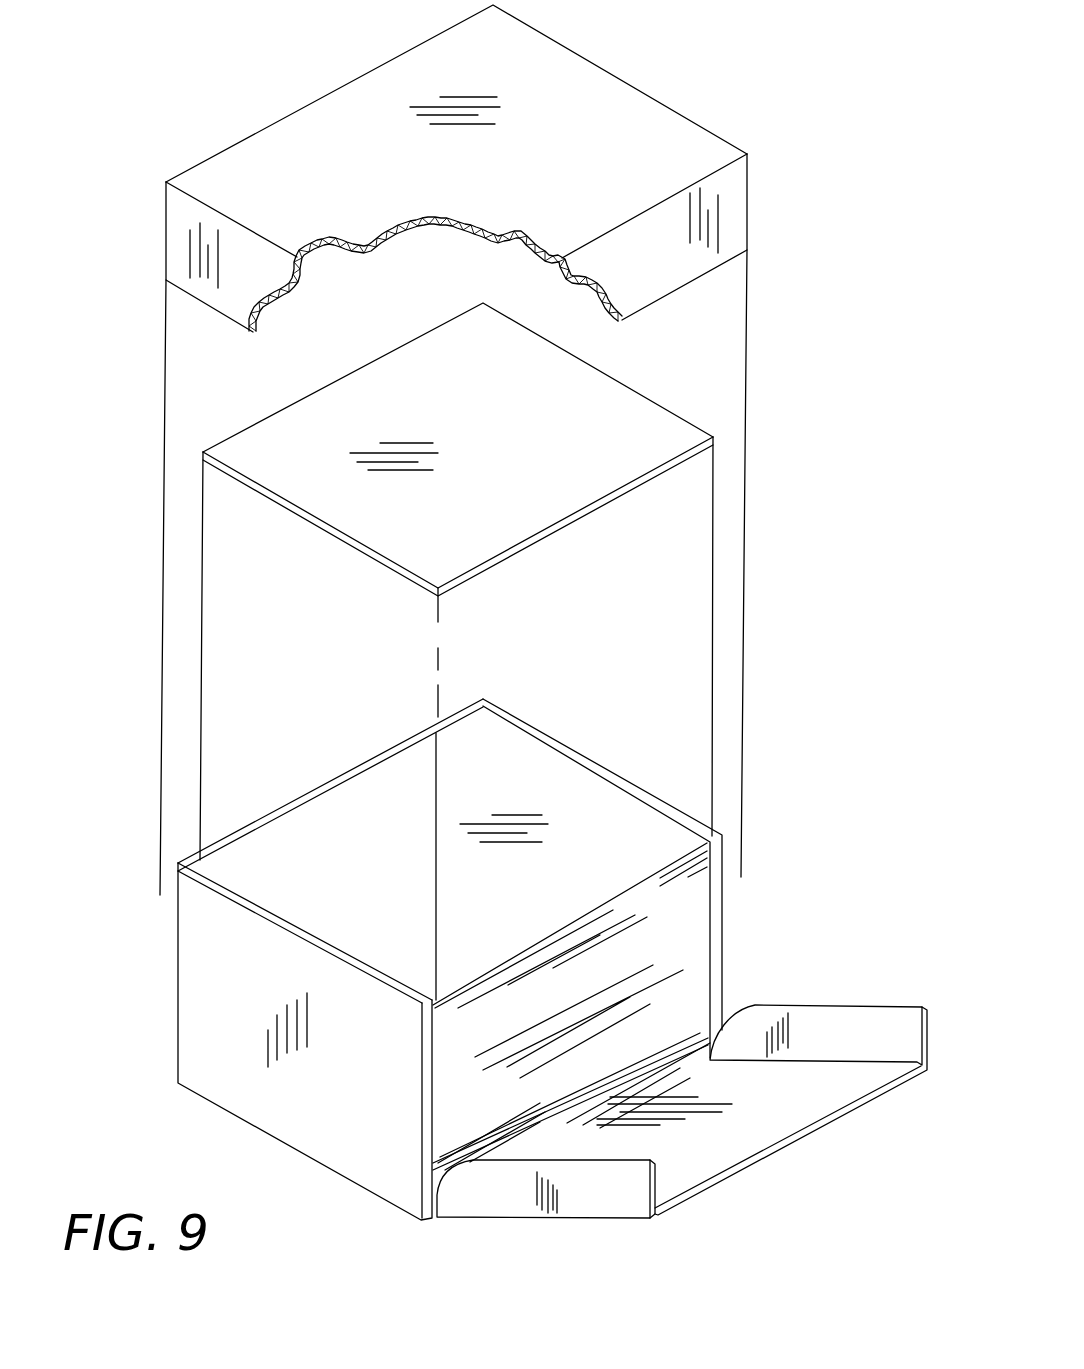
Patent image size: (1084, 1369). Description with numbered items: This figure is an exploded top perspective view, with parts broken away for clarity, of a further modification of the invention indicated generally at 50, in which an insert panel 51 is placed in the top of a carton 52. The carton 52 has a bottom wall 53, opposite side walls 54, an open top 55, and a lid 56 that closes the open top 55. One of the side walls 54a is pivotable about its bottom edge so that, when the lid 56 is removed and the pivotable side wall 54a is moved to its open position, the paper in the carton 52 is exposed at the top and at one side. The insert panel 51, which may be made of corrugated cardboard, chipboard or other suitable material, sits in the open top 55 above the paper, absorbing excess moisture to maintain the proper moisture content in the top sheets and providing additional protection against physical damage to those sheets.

The further modification of the invention 50 is at (168, 733).
The insert panel 51 is at (515, 557).
The carton 52 is at (175, 1010).
The bottom wall 53 is at (310, 1158).
The side walls 54 is at (268, 815).
The pivotable side wall 54a is at (793, 1142).
The open top 55 is at (602, 787).
The lid 56 is at (748, 188).